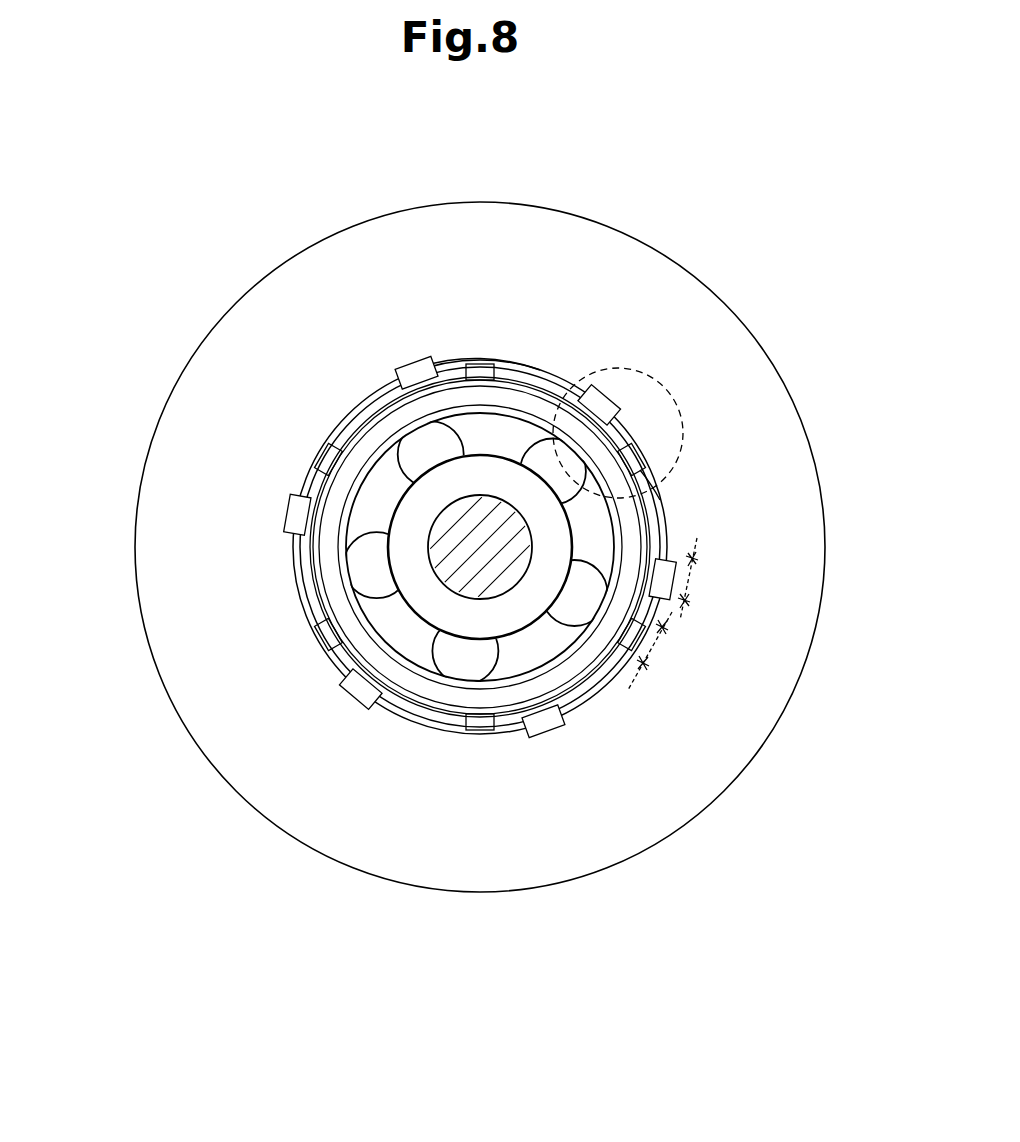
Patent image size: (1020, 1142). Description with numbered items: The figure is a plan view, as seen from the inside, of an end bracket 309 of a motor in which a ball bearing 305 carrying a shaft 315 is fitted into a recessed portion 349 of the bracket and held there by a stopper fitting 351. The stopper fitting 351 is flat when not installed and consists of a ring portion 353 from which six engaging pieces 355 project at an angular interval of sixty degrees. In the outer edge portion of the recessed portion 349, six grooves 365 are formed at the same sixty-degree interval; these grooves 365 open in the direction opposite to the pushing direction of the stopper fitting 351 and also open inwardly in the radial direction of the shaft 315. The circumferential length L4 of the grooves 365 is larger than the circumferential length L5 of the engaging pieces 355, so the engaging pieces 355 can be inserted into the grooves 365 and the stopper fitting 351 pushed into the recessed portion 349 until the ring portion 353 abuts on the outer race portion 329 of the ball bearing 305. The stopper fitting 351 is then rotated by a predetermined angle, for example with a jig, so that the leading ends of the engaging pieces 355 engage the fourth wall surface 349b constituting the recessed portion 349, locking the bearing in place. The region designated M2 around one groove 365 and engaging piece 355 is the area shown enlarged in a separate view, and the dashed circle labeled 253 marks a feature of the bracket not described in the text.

The end bracket 309 is at (698, 343).
The recessed portion 349 is at (653, 476).
The fourth wall surface 349b is at (520, 365).
The stopper fitting 351 is at (640, 505).
The ring portion 353 is at (638, 522).
The engaging pieces 355 is at (480, 364).
The grooves 365 is at (408, 355).
The boss region 253 is at (600, 438).
The outer race portion 329 is at (352, 578).
The ball bearing 305 is at (402, 548).
The shaft 315 is at (497, 585).
The region M2 is at (648, 442).
The length of the grooves L4 is at (704, 579).
The length of the engaging pieces L5 is at (660, 651).